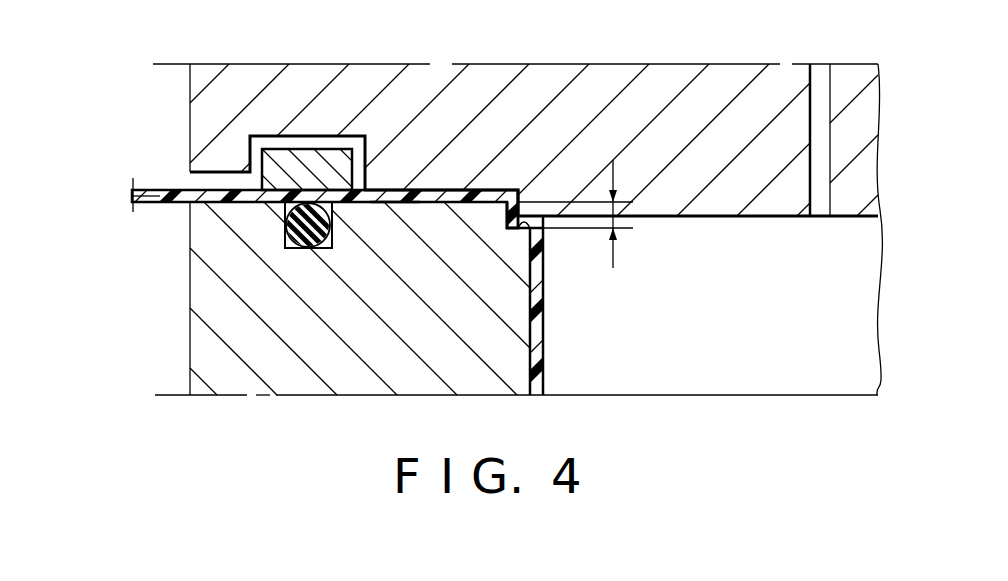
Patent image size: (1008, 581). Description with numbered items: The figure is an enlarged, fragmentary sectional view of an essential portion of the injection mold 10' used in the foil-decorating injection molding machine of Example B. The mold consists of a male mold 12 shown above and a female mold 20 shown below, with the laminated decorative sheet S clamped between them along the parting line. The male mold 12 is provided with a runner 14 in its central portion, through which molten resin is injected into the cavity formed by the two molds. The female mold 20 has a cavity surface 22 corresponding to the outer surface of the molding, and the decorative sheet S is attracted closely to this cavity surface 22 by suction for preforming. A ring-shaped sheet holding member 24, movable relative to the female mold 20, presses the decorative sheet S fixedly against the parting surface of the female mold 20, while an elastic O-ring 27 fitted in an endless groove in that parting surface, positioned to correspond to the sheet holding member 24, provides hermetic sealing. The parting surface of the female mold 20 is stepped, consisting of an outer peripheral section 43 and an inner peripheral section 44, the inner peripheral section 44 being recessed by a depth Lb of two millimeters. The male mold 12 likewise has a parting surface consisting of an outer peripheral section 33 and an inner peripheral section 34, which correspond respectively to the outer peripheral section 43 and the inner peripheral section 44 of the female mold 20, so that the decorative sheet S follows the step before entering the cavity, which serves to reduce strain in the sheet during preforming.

The injection mold 10' is at (80, 119).
The male mold 12 is at (190, 100).
The runner 14 is at (810, 192).
The female mold 20 is at (189, 329).
The cavity surface 22 is at (538, 328).
The sheet holding member 24 is at (313, 153).
The O-ring 27 is at (310, 247).
The outer peripheral section 33 is at (465, 188).
The inner peripheral section 34 is at (518, 202).
The outer peripheral section 43 is at (397, 201).
The inner peripheral section 44 is at (515, 225).
The decorative sheet S is at (154, 199).
The depth of inner peripheral section Lb is at (622, 216).